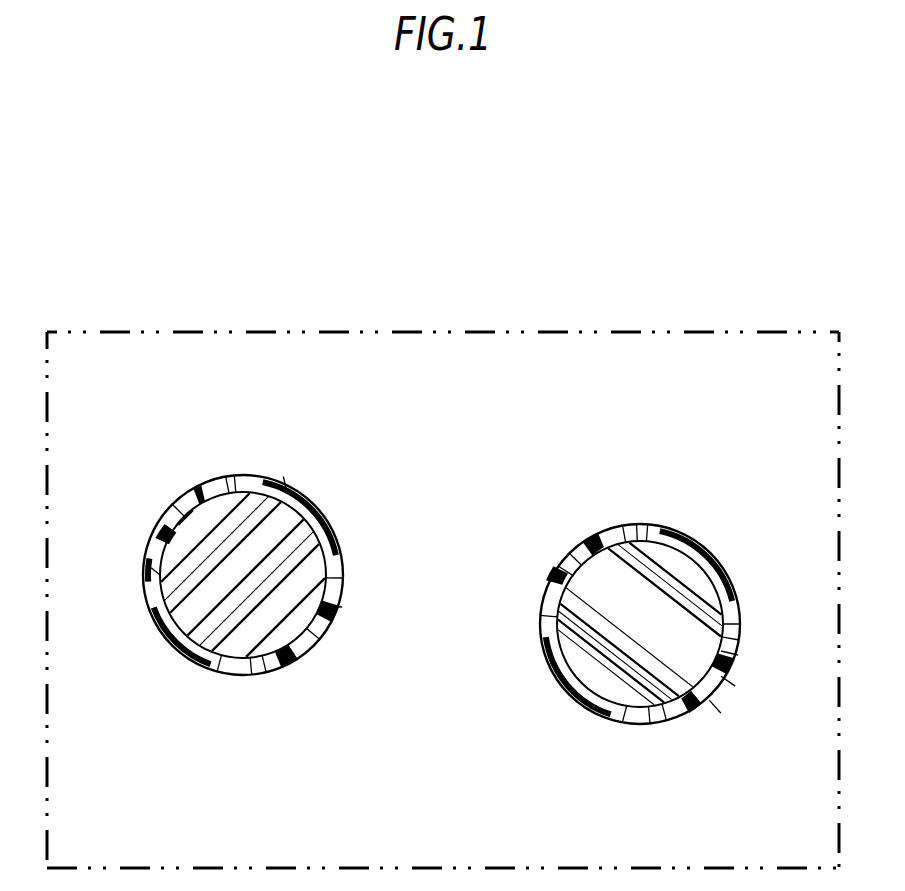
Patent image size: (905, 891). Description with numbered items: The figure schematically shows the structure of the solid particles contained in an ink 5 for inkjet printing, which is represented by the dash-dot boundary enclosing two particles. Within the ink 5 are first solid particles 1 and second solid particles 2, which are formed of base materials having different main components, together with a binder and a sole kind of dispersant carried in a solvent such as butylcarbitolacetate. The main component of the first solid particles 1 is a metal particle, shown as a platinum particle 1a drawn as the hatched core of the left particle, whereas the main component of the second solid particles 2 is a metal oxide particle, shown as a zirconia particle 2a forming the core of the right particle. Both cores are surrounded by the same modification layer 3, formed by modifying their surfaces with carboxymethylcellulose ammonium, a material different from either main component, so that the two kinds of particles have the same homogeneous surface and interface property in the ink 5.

The first solid particles 1 is at (253, 471).
The platinum particle 1a is at (245, 636).
The second solid particles 2 is at (650, 521).
The zirconia particle 2a is at (648, 690).
The modification layer 3 is at (560, 565).
The ink 5 is at (442, 333).